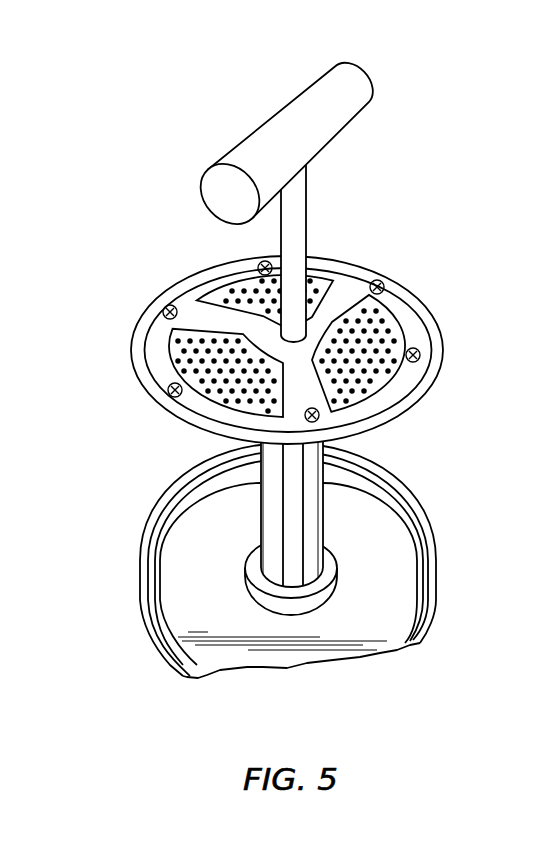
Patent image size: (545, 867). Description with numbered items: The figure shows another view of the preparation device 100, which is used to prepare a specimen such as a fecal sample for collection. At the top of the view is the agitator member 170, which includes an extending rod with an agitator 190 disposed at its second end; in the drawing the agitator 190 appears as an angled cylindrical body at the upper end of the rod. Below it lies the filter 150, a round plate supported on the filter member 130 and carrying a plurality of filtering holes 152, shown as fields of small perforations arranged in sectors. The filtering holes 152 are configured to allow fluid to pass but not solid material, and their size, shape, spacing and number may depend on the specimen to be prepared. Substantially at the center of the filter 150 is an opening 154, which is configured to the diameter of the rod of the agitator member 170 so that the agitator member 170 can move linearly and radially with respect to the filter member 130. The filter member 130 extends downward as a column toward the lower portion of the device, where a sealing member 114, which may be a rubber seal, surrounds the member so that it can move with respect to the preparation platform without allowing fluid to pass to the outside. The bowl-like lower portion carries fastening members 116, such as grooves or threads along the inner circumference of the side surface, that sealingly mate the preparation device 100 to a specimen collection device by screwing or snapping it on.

The preparation device 100 is at (485, 178).
The sealing member 114 is at (245, 572).
The fastening members 116 is at (162, 529).
The filter member 130 is at (330, 512).
The filter 150 is at (418, 372).
The filtering holes 152 is at (387, 339).
The opening 154 is at (315, 333).
The agitator member 170 is at (298, 241).
The agitator 190 is at (268, 146).